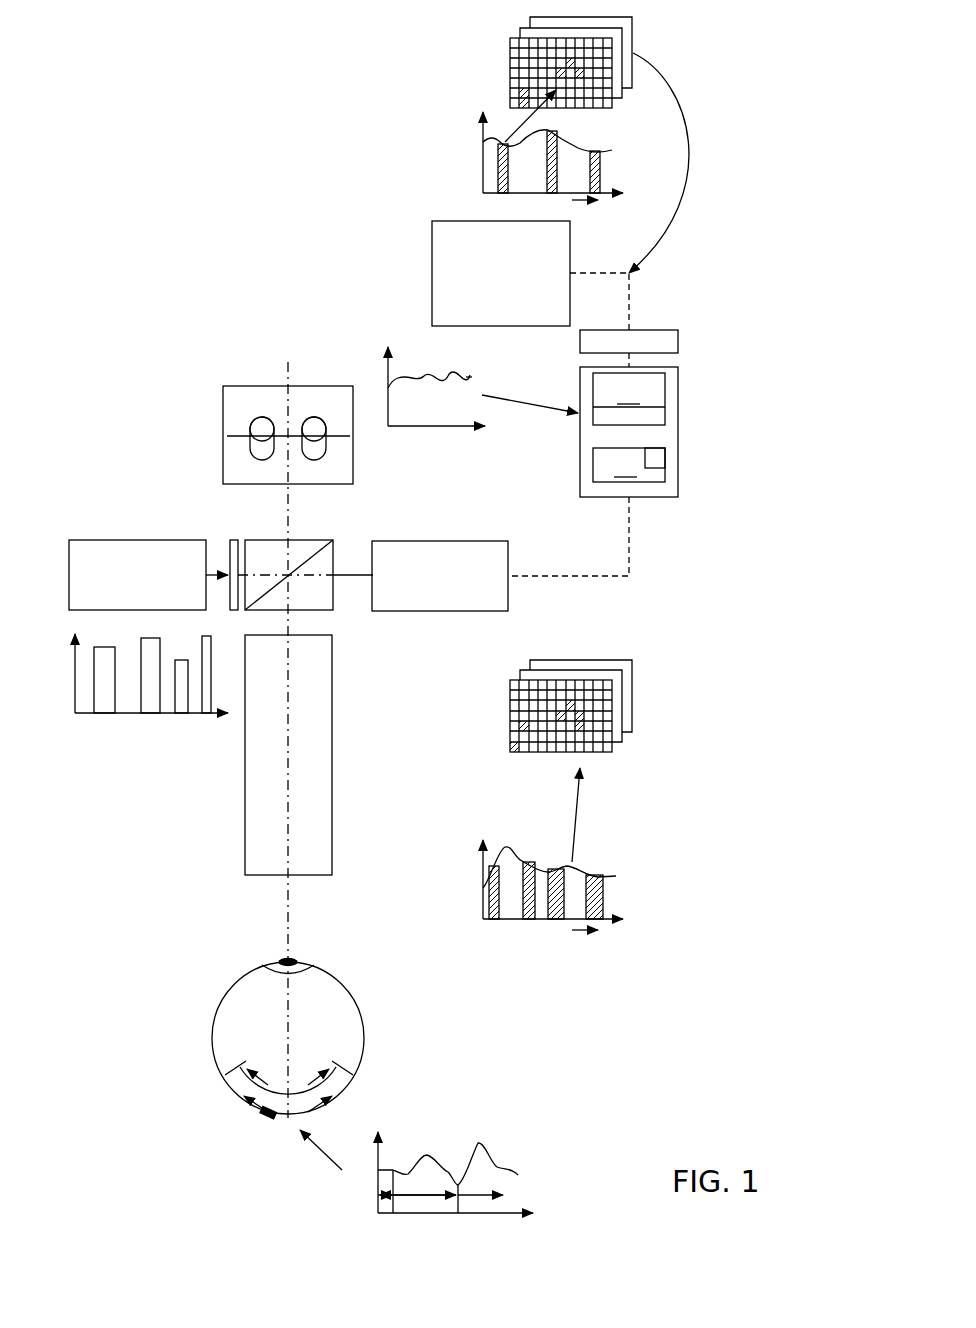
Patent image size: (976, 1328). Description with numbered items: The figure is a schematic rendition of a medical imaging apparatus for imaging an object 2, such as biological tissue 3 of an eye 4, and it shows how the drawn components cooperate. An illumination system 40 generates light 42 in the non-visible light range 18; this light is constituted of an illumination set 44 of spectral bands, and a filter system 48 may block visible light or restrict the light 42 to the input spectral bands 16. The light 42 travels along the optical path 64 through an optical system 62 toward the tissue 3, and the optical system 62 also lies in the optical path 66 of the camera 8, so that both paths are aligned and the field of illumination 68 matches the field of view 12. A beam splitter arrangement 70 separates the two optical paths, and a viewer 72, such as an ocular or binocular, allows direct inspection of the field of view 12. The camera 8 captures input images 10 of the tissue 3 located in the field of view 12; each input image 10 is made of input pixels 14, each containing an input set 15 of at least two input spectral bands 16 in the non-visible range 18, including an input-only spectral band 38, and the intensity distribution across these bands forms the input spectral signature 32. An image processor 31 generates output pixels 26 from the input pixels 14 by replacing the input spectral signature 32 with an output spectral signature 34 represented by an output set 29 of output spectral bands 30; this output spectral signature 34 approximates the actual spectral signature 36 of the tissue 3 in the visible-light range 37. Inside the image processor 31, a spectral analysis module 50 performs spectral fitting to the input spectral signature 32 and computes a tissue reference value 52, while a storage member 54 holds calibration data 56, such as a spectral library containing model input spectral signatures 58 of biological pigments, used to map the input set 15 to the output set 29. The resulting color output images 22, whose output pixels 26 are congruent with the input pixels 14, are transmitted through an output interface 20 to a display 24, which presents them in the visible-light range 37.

The object 2 is at (286, 1044).
The tissue 3 is at (267, 1066).
The eye 4 is at (353, 993).
The camera 8 is at (455, 541).
The input image 10 is at (510, 708).
The field of view 12 is at (307, 1111).
The input pixel 14 is at (553, 749).
The input set of spectral bands 15 is at (590, 860).
The input spectral bands 16 is at (530, 862).
The non-visible light range 18 is at (598, 930).
The output interface 20 is at (678, 343).
The output image 22 is at (505, 50).
The display 24 is at (432, 252).
The output pixel 26 is at (512, 72).
The output set of spectral bands 29 is at (521, 678).
The output spectral bands 30 is at (600, 162).
The image processor 31 is at (522, 404).
The input spectral signature 32 is at (512, 860).
The output spectral signature 34 is at (592, 150).
The actual spectral signature of object 36 is at (426, 1154).
The visible-light range 37 is at (585, 203).
The input-only spectral band 38 is at (557, 880).
The illumination system 40 is at (89, 540).
The light 42 is at (213, 572).
The illumination set of spectral bands 44 is at (96, 629).
The filter system 48 is at (236, 540).
The spectral analysis module 50 is at (629, 465).
The tissue reference value 52 is at (665, 457).
The storage member 54 is at (629, 399).
The calibration data 56 is at (665, 413).
The model input spectral signature 58 is at (466, 377).
The optical system 62 is at (332, 733).
The optical path of light of illumination system 64 is at (275, 572).
The optical path of camera 66 is at (352, 572).
The field of illumination 68 is at (310, 1086).
The beam splitter arrangement 70 is at (333, 607).
The viewer 72 is at (223, 396).